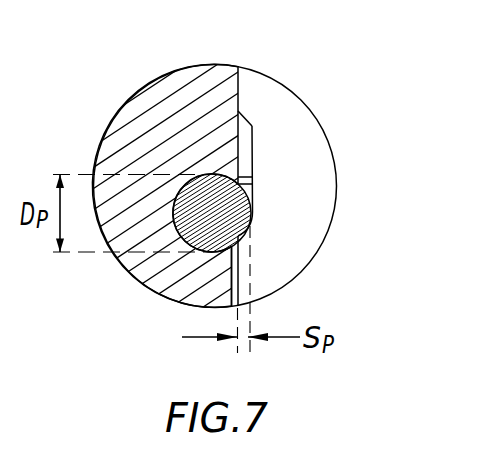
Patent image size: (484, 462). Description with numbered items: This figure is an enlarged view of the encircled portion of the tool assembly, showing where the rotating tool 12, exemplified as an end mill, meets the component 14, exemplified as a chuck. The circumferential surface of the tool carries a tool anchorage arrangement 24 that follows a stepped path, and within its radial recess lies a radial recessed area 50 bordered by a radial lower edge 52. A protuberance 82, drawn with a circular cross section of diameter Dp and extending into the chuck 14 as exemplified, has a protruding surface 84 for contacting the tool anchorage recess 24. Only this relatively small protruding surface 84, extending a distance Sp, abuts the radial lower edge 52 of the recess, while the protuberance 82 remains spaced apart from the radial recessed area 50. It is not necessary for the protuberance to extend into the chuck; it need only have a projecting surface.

The rotating tool 12 is at (290, 116).
The component 14 is at (178, 88).
The tool anchorage arrangement 24 is at (247, 115).
The radial recessed area 50 is at (252, 163).
The radial lower edge 52 is at (252, 230).
The protuberance 82 is at (266, 228).
The protruding surface 84 is at (262, 207).